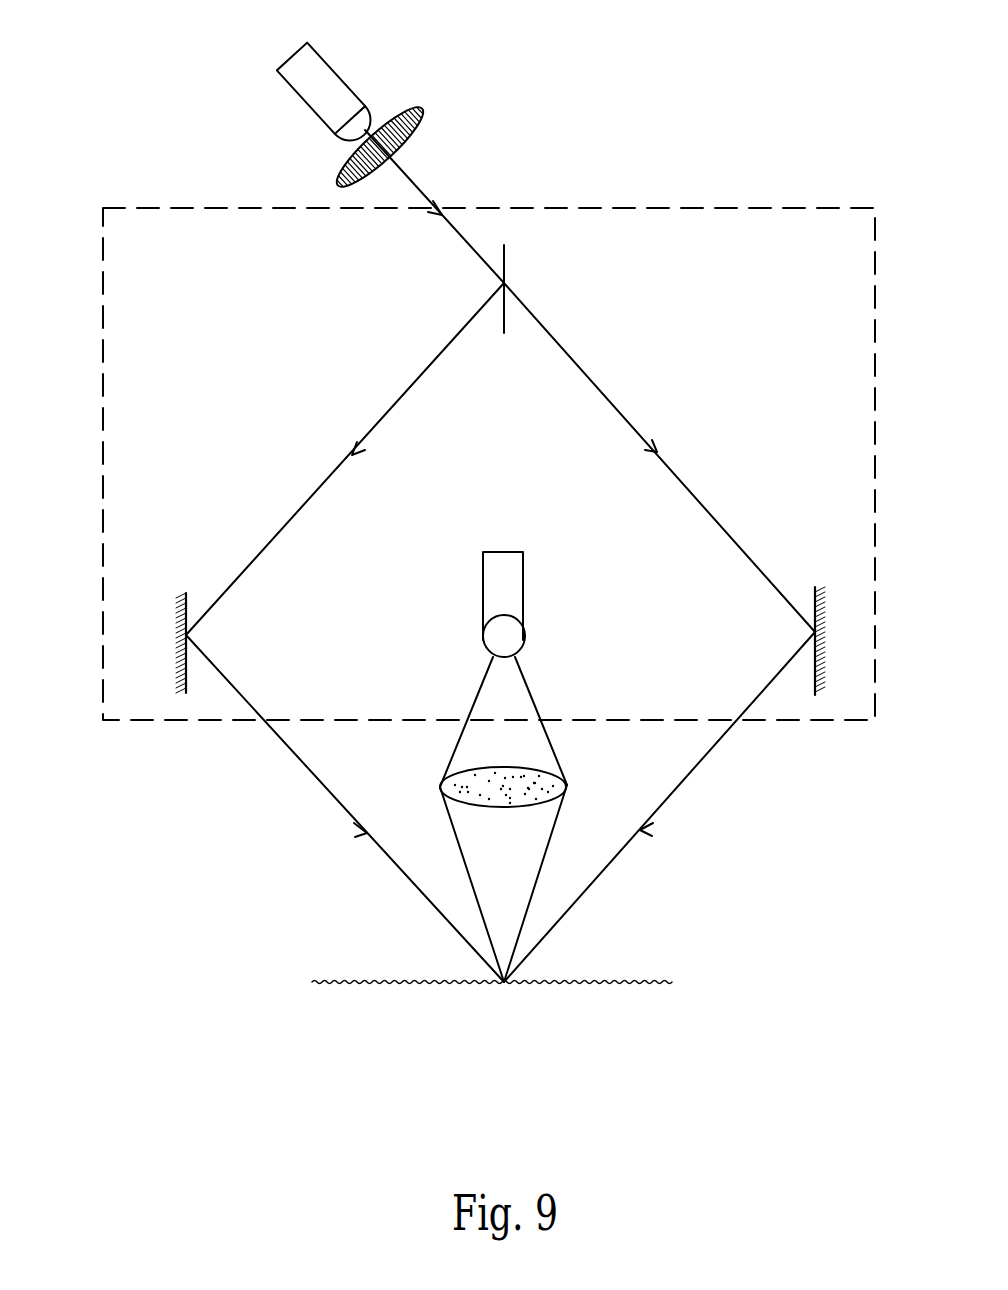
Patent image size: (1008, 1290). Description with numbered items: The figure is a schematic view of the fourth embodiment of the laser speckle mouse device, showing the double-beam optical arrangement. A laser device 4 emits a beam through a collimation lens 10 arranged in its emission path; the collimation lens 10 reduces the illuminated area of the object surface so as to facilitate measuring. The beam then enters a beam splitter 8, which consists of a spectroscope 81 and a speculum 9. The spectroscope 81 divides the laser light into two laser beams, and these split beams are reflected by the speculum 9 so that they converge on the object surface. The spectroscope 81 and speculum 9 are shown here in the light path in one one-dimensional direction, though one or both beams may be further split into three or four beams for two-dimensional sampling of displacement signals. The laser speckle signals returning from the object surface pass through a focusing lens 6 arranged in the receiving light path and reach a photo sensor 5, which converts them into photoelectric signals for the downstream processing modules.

The laser device 4 is at (292, 115).
The collimation lens 10 is at (398, 102).
The spectroscope 81 is at (567, 235).
The beam splitter 8 is at (489, 417).
The speculum 9 is at (118, 710).
The photo sensor 5 is at (620, 687).
The focusing lens 6 is at (576, 874).